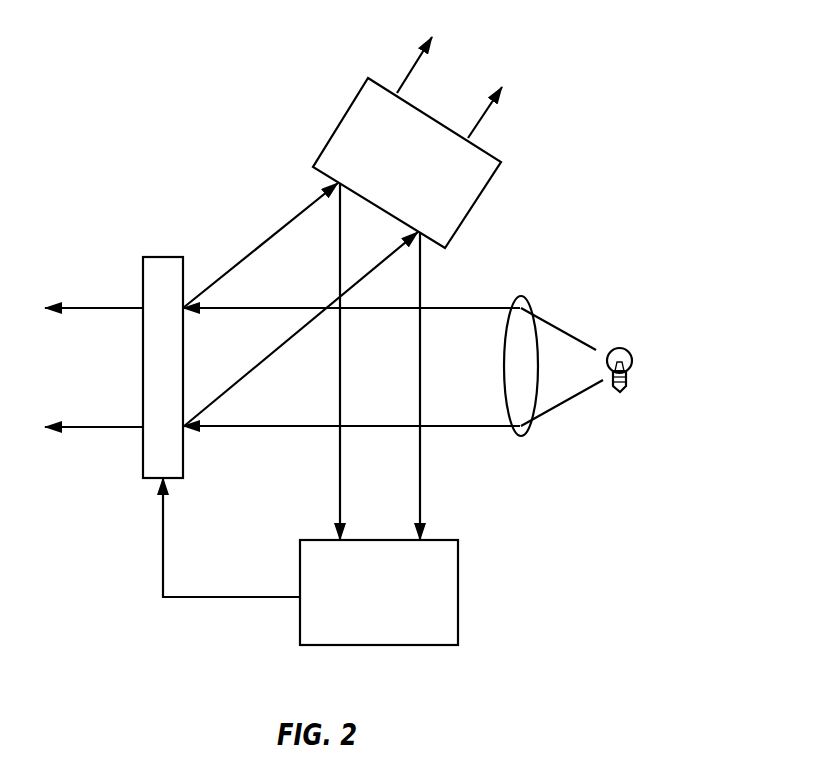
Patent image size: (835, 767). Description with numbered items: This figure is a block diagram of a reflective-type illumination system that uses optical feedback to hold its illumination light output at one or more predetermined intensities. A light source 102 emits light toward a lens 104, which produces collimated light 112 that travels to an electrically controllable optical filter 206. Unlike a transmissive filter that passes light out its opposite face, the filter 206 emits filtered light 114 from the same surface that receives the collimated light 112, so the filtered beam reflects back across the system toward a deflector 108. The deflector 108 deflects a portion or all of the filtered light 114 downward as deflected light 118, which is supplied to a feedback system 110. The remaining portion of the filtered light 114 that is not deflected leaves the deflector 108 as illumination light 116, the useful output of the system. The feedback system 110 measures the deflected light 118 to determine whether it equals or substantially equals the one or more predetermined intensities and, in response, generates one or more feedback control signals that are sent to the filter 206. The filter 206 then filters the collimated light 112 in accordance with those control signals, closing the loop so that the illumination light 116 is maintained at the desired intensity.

The light source 102 is at (656, 362).
The lens 104 is at (530, 303).
The deflector 108 is at (343, 117).
The feedback system 110 is at (460, 585).
The collimated light 112 is at (357, 367).
The filtered light 114 is at (285, 225).
The illumination light 116 is at (413, 67).
The deflected light 118 is at (339, 512).
The electrically controllable optical filter 206 is at (170, 256).